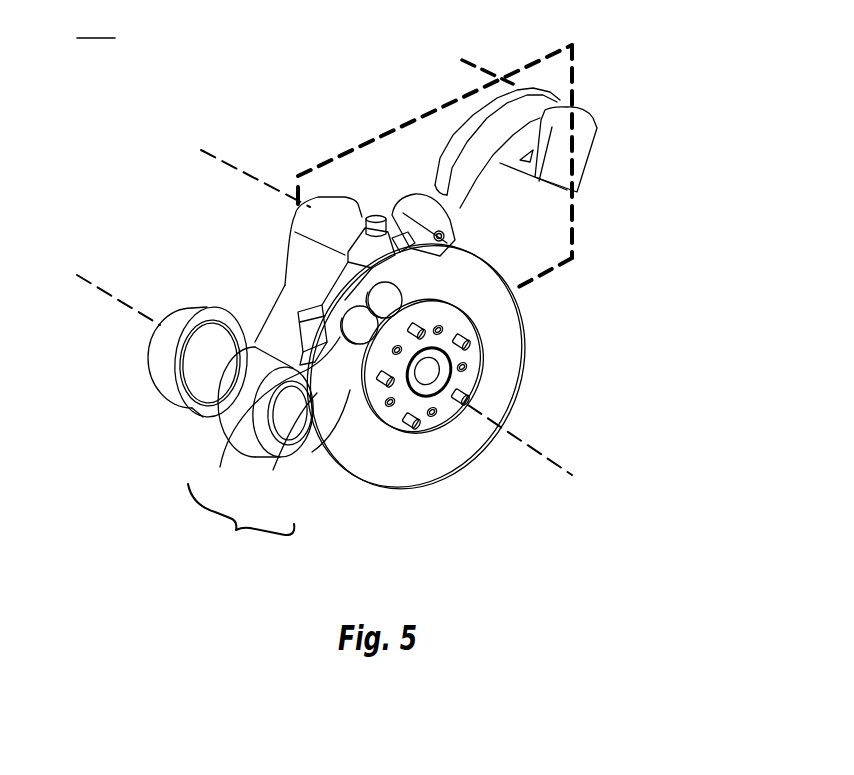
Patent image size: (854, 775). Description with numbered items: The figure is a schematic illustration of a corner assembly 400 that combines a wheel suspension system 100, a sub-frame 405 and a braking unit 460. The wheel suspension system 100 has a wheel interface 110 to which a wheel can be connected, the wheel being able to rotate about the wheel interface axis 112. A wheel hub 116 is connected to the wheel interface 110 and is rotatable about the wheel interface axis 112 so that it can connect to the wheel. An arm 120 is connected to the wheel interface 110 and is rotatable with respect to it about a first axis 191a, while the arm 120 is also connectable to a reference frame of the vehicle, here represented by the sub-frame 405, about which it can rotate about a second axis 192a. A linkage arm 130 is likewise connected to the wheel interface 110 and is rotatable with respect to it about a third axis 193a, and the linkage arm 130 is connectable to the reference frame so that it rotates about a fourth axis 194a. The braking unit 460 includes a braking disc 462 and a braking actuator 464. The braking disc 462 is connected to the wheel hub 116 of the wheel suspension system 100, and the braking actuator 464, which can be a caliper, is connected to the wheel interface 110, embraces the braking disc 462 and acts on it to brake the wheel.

The corner assembly 400 is at (96, 25).
The wheel suspension system 100 is at (198, 260).
The wheel interface 110 is at (376, 216).
The wheel interface axis 112 is at (547, 461).
The wheel hub 116 is at (470, 370).
The arm 120 is at (290, 285).
The linkage arm 130 is at (483, 158).
The first axis 191a is at (110, 297).
The second axis 192a is at (201, 150).
The third axis 193a is at (458, 240).
The fourth axis 194a is at (463, 60).
The sub-frame 405 is at (575, 54).
The braking unit 460 is at (241, 522).
The braking disc 462 is at (313, 390).
The braking actuator 464 is at (275, 368).